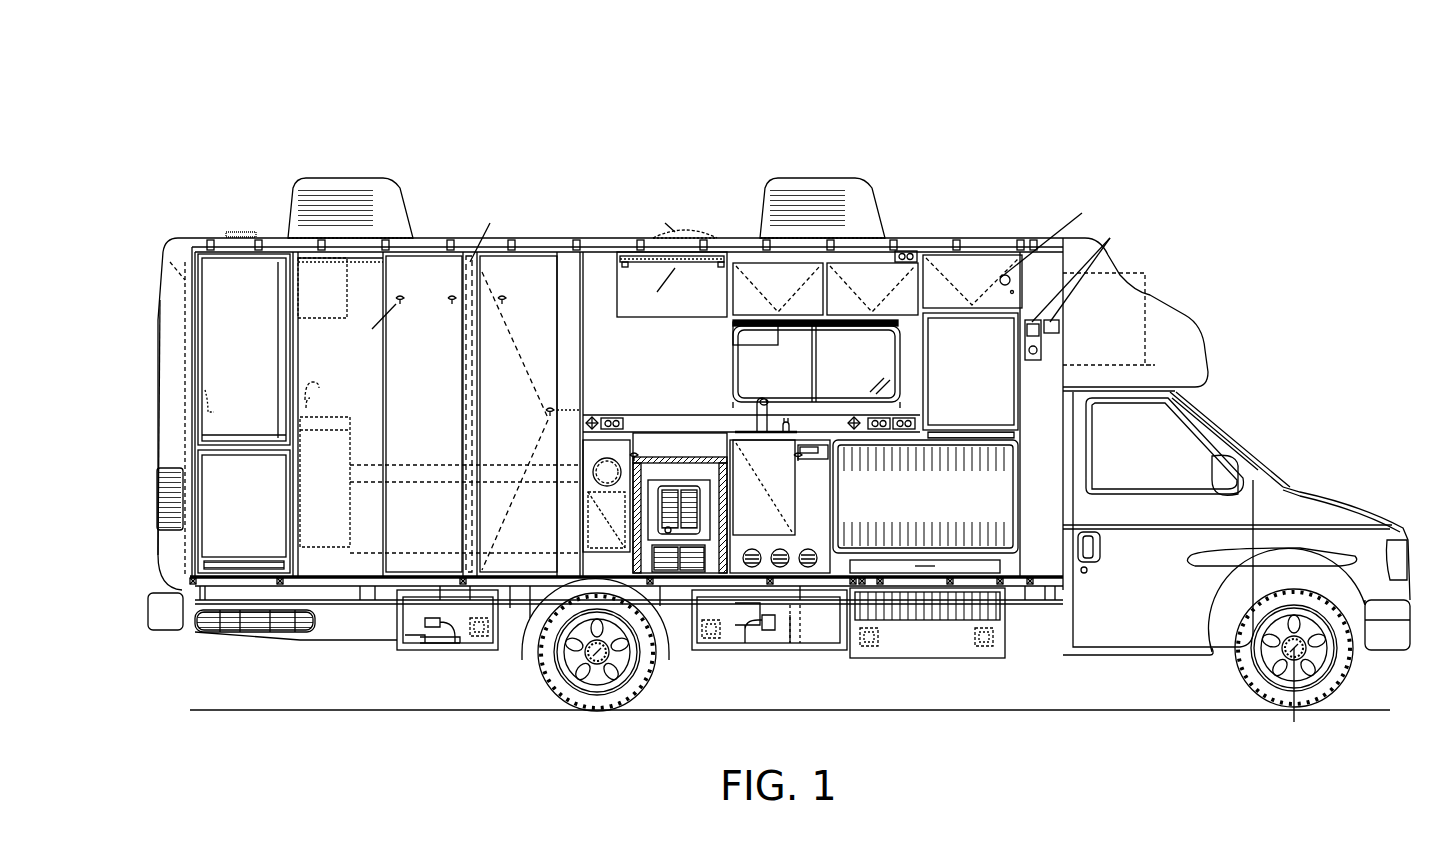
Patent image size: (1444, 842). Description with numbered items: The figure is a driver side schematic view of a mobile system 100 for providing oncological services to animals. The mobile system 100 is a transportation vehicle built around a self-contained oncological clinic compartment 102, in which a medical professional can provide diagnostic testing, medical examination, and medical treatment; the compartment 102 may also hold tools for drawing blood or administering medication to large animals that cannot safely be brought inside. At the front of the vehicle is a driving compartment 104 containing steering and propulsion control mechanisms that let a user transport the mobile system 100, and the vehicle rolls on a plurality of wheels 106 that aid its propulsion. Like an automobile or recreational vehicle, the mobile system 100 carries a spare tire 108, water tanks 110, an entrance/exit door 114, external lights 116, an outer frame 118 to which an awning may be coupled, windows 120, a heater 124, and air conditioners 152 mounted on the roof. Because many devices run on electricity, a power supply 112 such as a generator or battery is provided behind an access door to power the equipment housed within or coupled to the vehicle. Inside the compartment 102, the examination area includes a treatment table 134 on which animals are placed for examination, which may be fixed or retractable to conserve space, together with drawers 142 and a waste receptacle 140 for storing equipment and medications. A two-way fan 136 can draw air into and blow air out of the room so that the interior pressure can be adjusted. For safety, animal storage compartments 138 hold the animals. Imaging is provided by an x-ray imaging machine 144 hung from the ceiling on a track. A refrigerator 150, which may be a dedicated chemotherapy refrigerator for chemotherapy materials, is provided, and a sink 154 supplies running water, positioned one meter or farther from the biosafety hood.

The mobile system 100 is at (636, 27).
The self-contained oncological clinic compartment 102 is at (1063, 238).
The driving compartment 104 is at (1243, 438).
The wheels 106 is at (1240, 672).
The spare tire 108 is at (195, 632).
The water tank 110 is at (470, 643).
The power supply 112 is at (990, 653).
The entrance/exit door 114 is at (1118, 585).
The external light 116 is at (157, 482).
The outer frame 118 is at (163, 278).
The window 120 is at (827, 346).
The heater 124 is at (683, 492).
The treatment table 134 is at (658, 442).
The two-way fan 136 is at (688, 228).
The animal storage compartment 138 is at (1008, 522).
The waste receptacle 140 is at (596, 512).
The drawer 142 is at (933, 260).
The x-ray imaging machine 144 is at (707, 262).
The refrigerator 150 is at (1018, 378).
The air conditioner 152 is at (295, 195).
The sink 154 is at (752, 433).